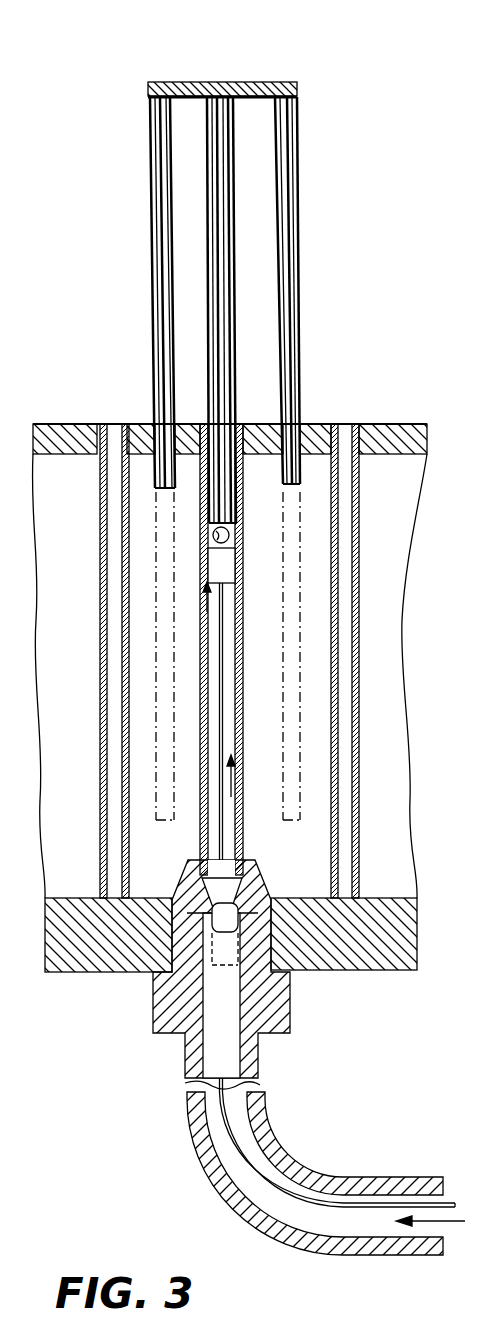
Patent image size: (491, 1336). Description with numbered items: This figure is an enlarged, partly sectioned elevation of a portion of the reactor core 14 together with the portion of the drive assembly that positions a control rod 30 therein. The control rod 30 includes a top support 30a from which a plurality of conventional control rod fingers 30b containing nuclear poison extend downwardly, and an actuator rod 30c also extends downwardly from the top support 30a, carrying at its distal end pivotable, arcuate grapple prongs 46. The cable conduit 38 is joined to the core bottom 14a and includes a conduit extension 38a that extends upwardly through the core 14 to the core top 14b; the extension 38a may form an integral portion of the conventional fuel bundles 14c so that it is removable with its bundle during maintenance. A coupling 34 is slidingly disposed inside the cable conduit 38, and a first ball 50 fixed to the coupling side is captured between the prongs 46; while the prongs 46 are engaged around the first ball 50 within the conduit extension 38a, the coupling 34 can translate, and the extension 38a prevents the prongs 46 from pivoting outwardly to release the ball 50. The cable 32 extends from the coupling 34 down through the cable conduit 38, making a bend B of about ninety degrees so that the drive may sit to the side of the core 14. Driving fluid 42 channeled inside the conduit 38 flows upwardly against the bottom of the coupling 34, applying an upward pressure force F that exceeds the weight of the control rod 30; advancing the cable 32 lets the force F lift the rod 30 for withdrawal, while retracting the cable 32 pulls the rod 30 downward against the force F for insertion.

The control rod 30 is at (253, 284).
The top support 30a is at (198, 82).
The control rod fingers 30b is at (299, 224).
The actuator rod 30c is at (236, 344).
The reactor core 14 is at (245, 685).
The core bottom 14a is at (358, 972).
The core top 14b is at (390, 416).
The fuel bundles 14c is at (120, 693).
The grapple prongs 46 is at (230, 532).
The first ball 50 is at (206, 547).
The coupling 34 is at (247, 566).
The cable 32 is at (214, 836).
The conduit extension 38a is at (243, 858).
The cable conduit 38 is at (374, 1165).
The driving fluid 42 is at (237, 780).
The pressure force F is at (207, 608).
The bend B is at (233, 1203).